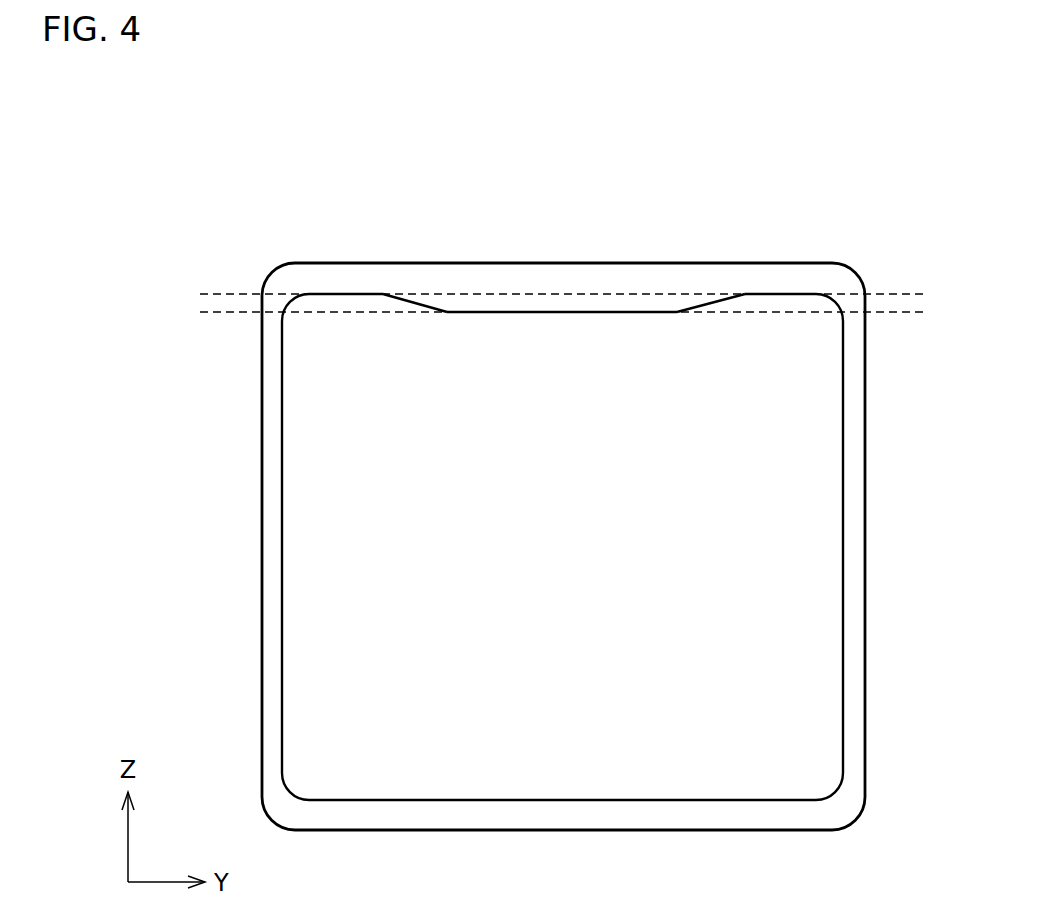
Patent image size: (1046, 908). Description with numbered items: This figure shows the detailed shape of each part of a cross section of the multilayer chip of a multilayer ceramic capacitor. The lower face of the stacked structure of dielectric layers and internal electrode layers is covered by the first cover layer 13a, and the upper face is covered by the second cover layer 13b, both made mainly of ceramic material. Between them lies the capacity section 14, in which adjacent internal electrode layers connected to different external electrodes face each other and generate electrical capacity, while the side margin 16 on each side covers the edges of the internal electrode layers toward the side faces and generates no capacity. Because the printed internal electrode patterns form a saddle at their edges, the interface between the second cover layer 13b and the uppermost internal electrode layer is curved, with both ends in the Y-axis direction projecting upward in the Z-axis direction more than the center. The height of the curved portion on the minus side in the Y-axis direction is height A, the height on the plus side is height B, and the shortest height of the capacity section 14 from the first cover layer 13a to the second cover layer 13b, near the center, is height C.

The capacity section 14 is at (813, 507).
The first cover layer 13a is at (463, 818).
The second cover layer 13b is at (548, 276).
The side margin 16 is at (268, 535).
The height A is at (205, 255).
The height B is at (923, 255).
The height C is at (564, 312).